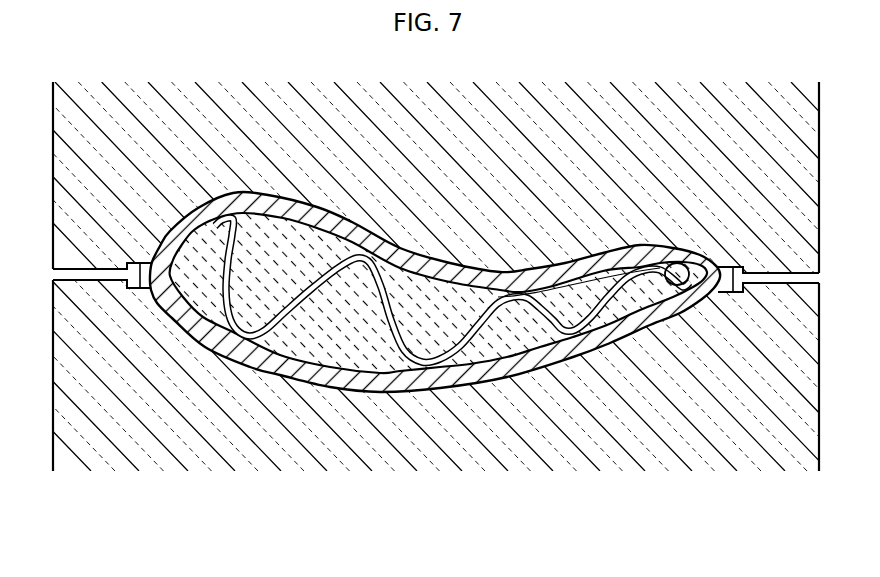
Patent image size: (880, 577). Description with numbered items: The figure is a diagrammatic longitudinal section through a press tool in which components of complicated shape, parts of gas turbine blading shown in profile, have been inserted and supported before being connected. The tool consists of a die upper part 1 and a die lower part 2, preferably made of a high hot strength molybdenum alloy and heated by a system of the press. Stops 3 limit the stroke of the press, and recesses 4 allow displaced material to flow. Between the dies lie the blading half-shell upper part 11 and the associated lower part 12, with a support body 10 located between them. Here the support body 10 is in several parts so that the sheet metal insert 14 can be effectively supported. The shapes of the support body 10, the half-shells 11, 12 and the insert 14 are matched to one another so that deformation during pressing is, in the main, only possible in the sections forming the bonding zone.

The die upper part 1 is at (518, 150).
The die lower part 2 is at (605, 403).
The stops 3 is at (80, 266).
The recesses 4 is at (141, 263).
The support body 10 is at (438, 318).
The blading half-shell, upper part 11 is at (241, 220).
The blading half-shell, lower part 12 is at (205, 318).
The sheet metal insert 14 is at (562, 284).